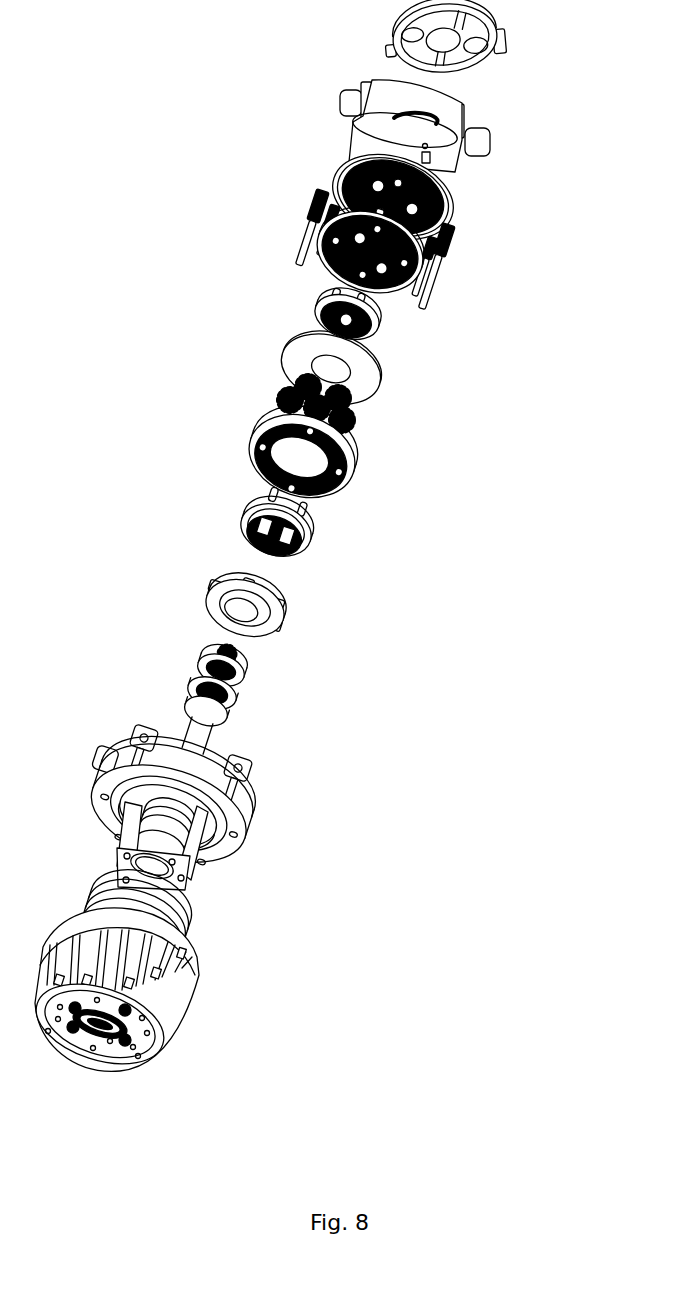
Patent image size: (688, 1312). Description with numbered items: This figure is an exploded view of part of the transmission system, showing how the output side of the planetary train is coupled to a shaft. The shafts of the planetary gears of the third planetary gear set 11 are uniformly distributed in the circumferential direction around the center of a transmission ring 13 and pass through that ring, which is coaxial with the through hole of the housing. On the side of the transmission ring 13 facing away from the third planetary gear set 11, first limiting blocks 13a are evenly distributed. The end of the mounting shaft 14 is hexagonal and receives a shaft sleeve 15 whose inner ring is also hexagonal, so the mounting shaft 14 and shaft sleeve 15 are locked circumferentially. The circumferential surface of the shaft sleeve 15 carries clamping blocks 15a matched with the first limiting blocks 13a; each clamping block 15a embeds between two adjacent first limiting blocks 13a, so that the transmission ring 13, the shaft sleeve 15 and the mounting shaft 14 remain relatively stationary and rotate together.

The third planetary gear set 11 is at (290, 400).
The transmission ring 13 is at (262, 512).
The first limiting block 13a is at (246, 535).
The mounting shaft 14 is at (236, 696).
The shaft sleeve 15 is at (284, 562).
The clamping block 15a is at (292, 527).